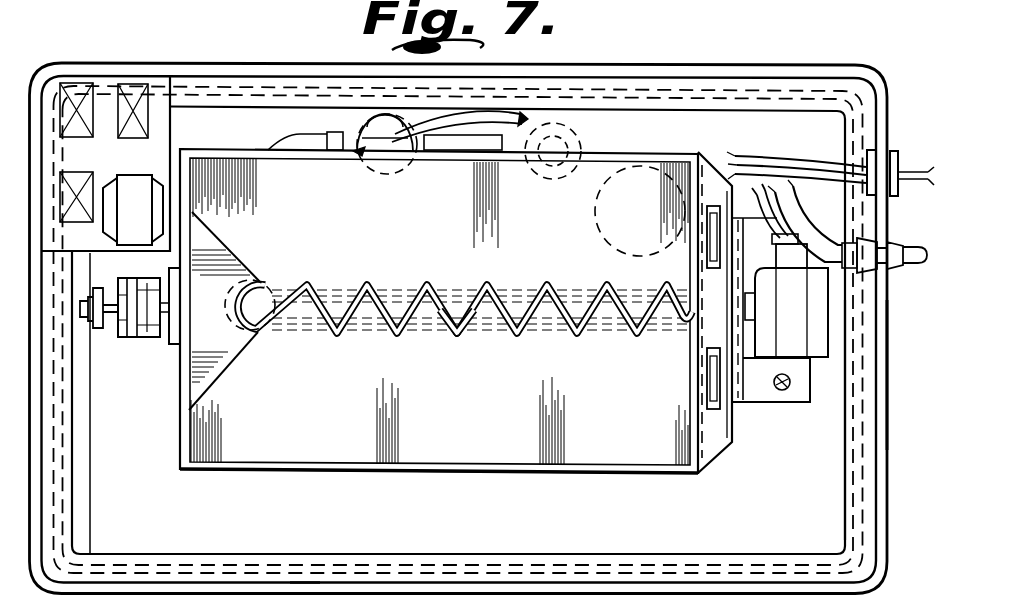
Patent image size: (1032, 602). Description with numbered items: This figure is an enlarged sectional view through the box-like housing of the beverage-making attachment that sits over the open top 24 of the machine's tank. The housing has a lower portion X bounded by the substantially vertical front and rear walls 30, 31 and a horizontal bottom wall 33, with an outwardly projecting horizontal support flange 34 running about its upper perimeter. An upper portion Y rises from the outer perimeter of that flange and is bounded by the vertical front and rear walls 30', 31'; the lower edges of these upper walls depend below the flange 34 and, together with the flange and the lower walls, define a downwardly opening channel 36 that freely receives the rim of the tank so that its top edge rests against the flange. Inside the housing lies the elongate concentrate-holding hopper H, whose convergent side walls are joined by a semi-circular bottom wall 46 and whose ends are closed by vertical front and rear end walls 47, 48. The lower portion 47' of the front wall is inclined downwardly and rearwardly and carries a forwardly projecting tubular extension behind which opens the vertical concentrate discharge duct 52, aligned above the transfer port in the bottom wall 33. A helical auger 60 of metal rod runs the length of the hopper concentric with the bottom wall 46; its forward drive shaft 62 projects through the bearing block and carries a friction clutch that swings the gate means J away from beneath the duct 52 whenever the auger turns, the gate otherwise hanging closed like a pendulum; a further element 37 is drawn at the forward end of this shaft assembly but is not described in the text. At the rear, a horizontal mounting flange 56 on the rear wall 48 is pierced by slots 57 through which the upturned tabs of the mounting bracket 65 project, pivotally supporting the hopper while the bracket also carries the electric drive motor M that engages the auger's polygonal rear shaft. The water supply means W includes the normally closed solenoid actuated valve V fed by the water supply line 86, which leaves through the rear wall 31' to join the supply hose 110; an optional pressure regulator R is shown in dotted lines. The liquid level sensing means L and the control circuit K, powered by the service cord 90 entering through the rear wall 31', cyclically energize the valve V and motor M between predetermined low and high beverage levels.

The open top 24 is at (760, 570).
The front wall 30 is at (458, 331).
The front wall 30' is at (458, 329).
The rear wall 31 is at (810, 420).
The rear wall 31' is at (911, 399).
The bottom wall 33 is at (565, 505).
The support flange 34 is at (627, 567).
The downwardly opening channel 36 is at (680, 550).
The control circuit K is at (160, 143).
The hopper H is at (454, 464).
The front end wall 47 is at (246, 371).
The lower portion of front wall 47' is at (248, 222).
The bottom wall 46 is at (547, 318).
The helical auger 60 is at (456, 320).
The concentrate discharge duct 52 is at (268, 285).
The drive shaft 62 is at (165, 300).
The shaft nut and washers 37 is at (105, 330).
The gate means J is at (155, 340).
The water supply means W is at (324, 134).
The solenoid actuated valve V is at (362, 156).
The water supply line 86 is at (486, 145).
The pressure regulator R is at (578, 128).
The liquid level sensing means L is at (645, 146).
The mounting flange 56 is at (712, 173).
The slots 57 is at (712, 239).
The rear end wall 48 is at (690, 359).
The service cord 90 is at (831, 166).
The water supply hose 110 is at (906, 252).
The electric drive motor M is at (826, 355).
The mounting bracket 65 is at (740, 385).
The lower portion X is at (252, 553).
The upper portion Y is at (302, 585).